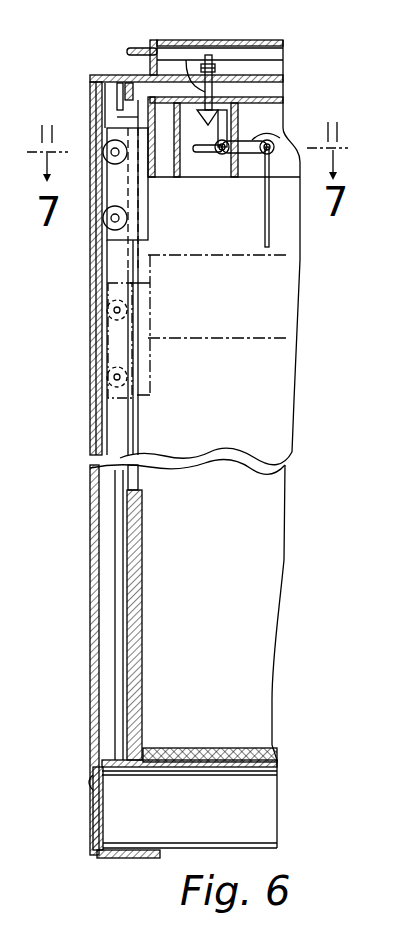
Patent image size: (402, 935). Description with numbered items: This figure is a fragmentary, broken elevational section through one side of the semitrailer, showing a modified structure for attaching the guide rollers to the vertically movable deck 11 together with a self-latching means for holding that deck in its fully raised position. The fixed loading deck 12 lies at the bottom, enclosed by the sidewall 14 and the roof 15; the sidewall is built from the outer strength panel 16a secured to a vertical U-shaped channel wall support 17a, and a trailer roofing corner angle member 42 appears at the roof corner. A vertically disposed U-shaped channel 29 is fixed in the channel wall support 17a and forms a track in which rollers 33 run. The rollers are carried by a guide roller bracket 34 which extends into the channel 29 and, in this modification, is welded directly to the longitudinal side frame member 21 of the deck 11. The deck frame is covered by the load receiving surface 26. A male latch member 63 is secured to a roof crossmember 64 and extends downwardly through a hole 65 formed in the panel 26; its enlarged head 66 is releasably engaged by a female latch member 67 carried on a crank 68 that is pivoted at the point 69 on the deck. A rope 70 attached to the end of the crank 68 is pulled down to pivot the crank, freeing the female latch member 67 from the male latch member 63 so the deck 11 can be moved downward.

The trailer roofing corner angle member 42 is at (97, 72).
The sidewall 14 is at (99, 300).
The roof 15 is at (255, 56).
The vertically movable deck 11 is at (280, 184).
The male latch member 63 is at (260, 63).
The roof crossmember 64 is at (209, 54).
The hole 65 is at (186, 60).
The longitudinal side frame member 21 is at (172, 180).
The enlarged head 66 is at (210, 124).
The female latch member 67 is at (250, 98).
The load receiving surface 26 is at (285, 95).
The crank 68 is at (273, 139).
The pivot point 69 is at (224, 155).
The rope 70 is at (265, 249).
The roller carrier bracket 34 is at (125, 200).
The roller 33 is at (105, 150).
The U-shaped channel 29 is at (112, 264).
The sidewall support channel 17a is at (92, 333).
The outer strength panel 16a is at (92, 373).
The fixed loading deck 12 is at (180, 757).